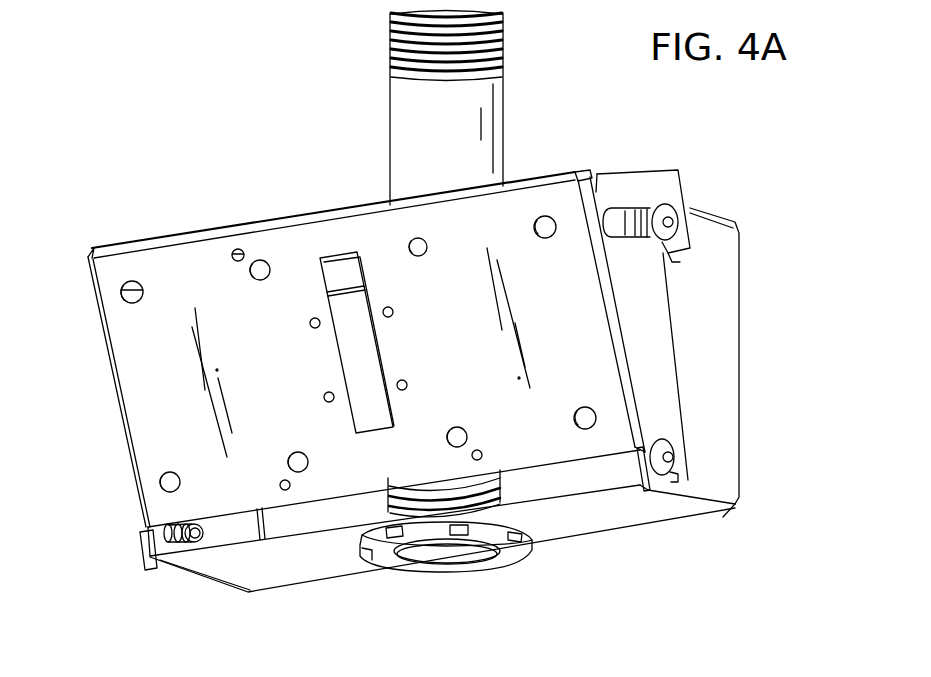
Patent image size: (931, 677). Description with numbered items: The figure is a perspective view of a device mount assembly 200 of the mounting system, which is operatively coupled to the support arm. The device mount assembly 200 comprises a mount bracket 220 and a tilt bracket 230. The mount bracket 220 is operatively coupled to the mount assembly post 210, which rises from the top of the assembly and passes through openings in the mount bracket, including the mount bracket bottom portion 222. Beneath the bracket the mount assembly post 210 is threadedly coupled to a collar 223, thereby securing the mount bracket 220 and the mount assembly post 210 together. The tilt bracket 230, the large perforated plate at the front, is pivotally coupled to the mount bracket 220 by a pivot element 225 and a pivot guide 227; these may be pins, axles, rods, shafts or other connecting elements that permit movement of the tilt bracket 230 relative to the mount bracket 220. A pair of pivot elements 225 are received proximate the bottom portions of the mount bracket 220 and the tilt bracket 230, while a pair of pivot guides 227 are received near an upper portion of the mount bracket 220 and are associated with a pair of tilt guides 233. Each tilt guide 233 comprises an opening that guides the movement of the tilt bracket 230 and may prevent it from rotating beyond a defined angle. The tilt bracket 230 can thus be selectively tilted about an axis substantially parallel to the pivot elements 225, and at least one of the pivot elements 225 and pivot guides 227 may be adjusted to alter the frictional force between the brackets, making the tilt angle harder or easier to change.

The device mount assembly 200 is at (231, 86).
The mount assembly post 210 is at (407, 127).
The mount bracket 220 is at (723, 315).
The mount bracket bottom portion 222 is at (288, 572).
The collar 223 is at (510, 556).
The pivot element 225 is at (675, 462).
The pivot guide 227 is at (662, 204).
The tilt bracket 230 is at (130, 395).
The tilt guide 233 is at (622, 207).